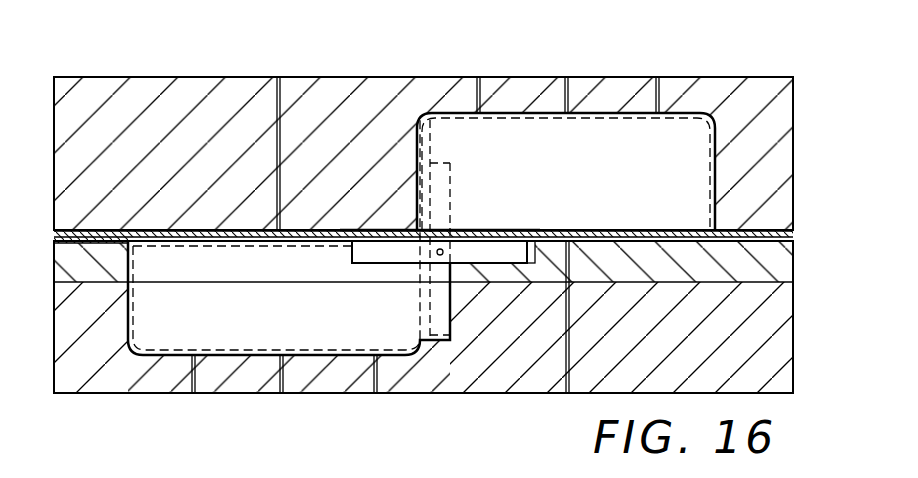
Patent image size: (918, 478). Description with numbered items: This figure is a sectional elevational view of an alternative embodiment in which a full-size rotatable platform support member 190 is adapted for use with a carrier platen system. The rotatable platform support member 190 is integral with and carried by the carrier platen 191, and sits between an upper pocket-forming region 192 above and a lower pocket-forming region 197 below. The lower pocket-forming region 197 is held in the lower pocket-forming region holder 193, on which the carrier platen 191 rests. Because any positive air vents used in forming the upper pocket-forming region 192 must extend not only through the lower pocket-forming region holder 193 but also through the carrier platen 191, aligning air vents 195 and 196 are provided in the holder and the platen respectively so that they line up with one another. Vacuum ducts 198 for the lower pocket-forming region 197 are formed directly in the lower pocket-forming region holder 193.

The rotatable platform support member 190 is at (368, 253).
The carrier platen 191 is at (778, 258).
The upper pocket-forming region 192 is at (603, 166).
The lower pocket-forming region holder 193 is at (782, 338).
The air vent 195 is at (568, 360).
The air vent 196 is at (572, 257).
The lower pocket-forming region 197 is at (296, 327).
The vacuum ducts 198 is at (193, 378).